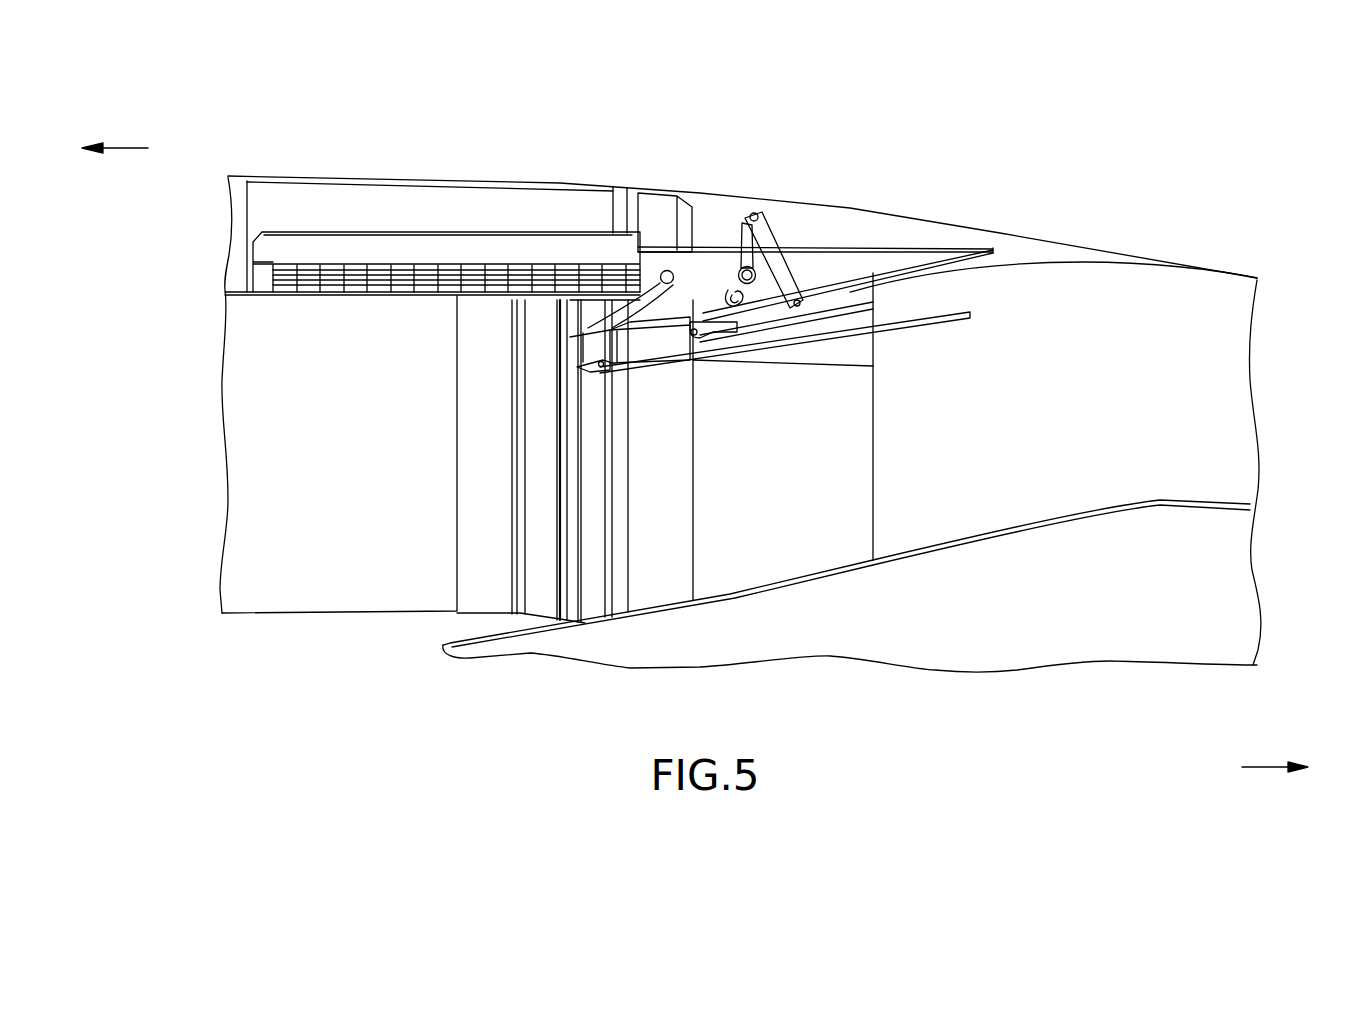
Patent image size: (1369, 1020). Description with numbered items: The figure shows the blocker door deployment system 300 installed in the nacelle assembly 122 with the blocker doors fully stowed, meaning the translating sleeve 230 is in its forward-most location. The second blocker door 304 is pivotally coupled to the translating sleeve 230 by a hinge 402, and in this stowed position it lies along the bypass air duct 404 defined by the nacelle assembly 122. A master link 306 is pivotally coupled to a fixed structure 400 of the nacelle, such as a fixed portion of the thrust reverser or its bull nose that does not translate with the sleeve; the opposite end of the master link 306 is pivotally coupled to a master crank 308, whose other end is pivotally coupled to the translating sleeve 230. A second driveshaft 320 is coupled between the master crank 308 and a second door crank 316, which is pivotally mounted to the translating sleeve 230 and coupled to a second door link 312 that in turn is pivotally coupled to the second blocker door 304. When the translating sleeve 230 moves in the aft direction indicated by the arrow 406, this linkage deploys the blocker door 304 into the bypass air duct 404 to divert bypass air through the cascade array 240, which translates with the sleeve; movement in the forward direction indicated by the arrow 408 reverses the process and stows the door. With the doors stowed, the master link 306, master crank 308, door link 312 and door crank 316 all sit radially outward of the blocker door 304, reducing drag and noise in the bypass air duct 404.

The nacelle assembly 122 is at (1256, 247).
The translating sleeve 230 is at (1078, 283).
The cascade array 240 is at (398, 258).
The system 300 is at (843, 195).
The second blocker door 304 is at (857, 307).
The master link 306 is at (652, 368).
The master crank 308 is at (773, 304).
The second door link 312 is at (787, 272).
The second door crank 316 is at (745, 218).
The second driveshaft 320 is at (728, 290).
The fixed structure 400 is at (600, 371).
The hinge 402 is at (735, 332).
The bypass air duct 404 is at (838, 540).
The arrow 406 is at (1280, 767).
The arrow 408 is at (120, 148).